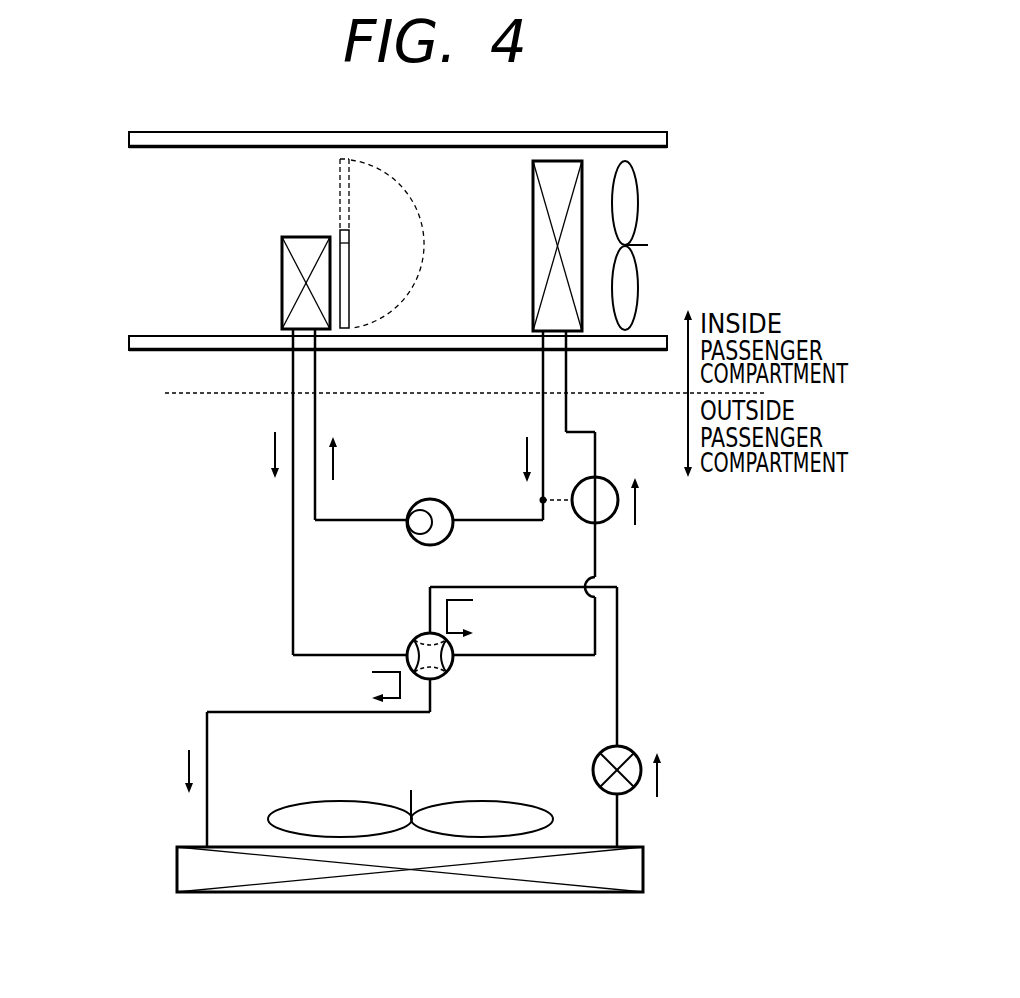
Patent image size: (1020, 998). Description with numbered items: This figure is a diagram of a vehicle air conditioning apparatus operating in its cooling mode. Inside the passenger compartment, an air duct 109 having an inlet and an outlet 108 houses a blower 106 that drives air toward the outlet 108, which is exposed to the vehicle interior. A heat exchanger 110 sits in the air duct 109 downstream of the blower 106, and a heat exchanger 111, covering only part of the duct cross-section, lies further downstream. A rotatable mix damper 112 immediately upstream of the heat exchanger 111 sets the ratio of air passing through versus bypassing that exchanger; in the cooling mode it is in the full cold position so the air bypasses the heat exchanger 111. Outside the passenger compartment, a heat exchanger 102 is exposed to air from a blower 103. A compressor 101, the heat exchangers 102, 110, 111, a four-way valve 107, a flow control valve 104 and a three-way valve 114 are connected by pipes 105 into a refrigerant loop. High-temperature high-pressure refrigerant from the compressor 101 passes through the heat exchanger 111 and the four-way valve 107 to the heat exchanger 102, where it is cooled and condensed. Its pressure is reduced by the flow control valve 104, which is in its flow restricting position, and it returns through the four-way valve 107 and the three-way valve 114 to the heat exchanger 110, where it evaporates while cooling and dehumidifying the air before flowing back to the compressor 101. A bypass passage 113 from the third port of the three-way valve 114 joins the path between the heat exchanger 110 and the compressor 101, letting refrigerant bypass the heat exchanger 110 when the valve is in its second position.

The compressor 101 is at (440, 499).
The heat exchanger 102 is at (644, 868).
The blower 103 is at (495, 802).
The flow control valve 104 is at (601, 758).
The pipes 105 is at (294, 605).
The blower 106 is at (640, 208).
The four-way valve 107 is at (409, 641).
The outlet 108 is at (106, 187).
The air duct 109 is at (182, 335).
The heat exchanger 110 is at (533, 195).
The heat exchanger 111 is at (304, 237).
The mix damper 112 is at (339, 187).
The bypass passage 113 is at (553, 503).
The three-way valve 114 is at (612, 520).